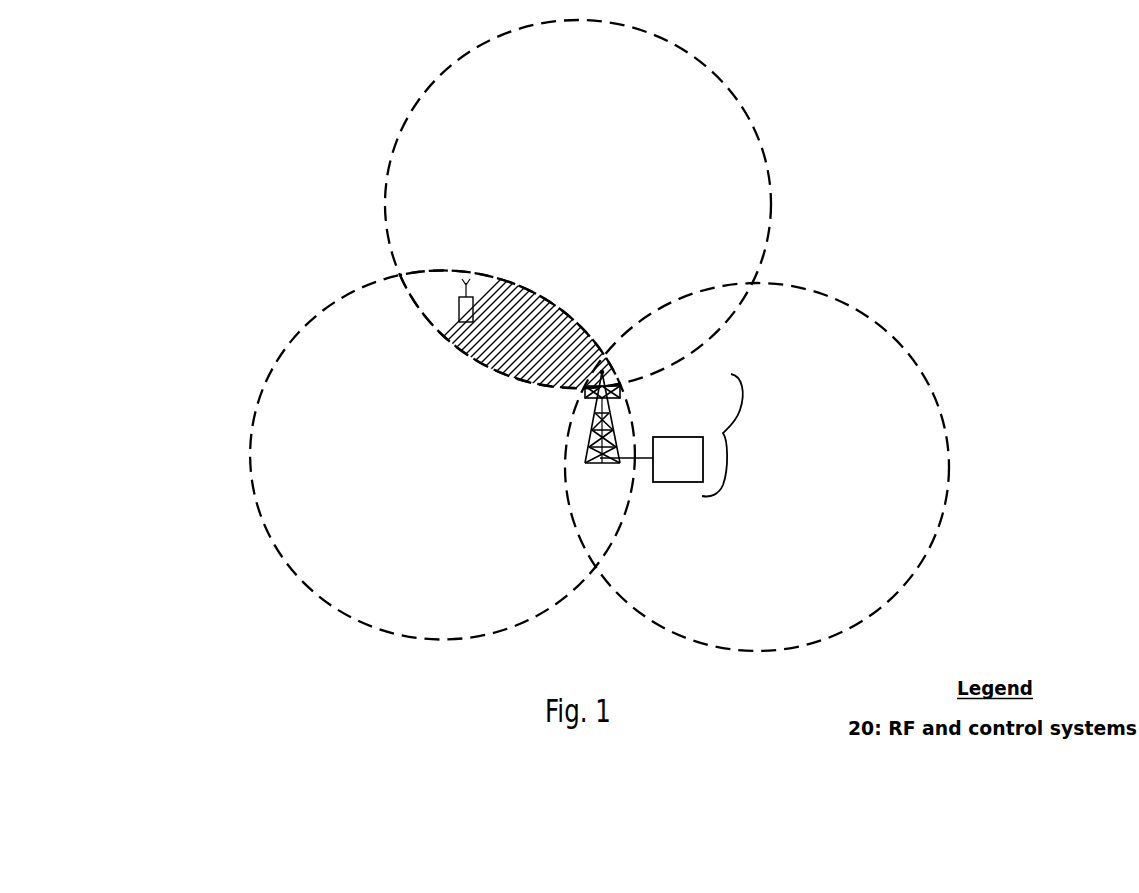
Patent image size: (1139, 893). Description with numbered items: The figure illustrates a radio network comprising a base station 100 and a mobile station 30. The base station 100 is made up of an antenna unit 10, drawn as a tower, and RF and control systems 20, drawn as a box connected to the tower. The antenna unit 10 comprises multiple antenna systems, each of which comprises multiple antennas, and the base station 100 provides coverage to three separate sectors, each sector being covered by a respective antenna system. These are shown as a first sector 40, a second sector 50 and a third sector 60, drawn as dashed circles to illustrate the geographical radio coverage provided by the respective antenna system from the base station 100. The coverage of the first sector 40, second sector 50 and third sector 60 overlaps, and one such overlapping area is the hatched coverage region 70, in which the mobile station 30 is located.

The antenna unit 10 is at (638, 392).
The RF and control systems 20 is at (690, 474).
The mobile station 30 is at (479, 289).
The first sector 40 is at (264, 558).
The second sector 50 is at (771, 131).
The third sector 60 is at (973, 428).
The coverage region 70 is at (408, 303).
The base station 100 is at (679, 434).